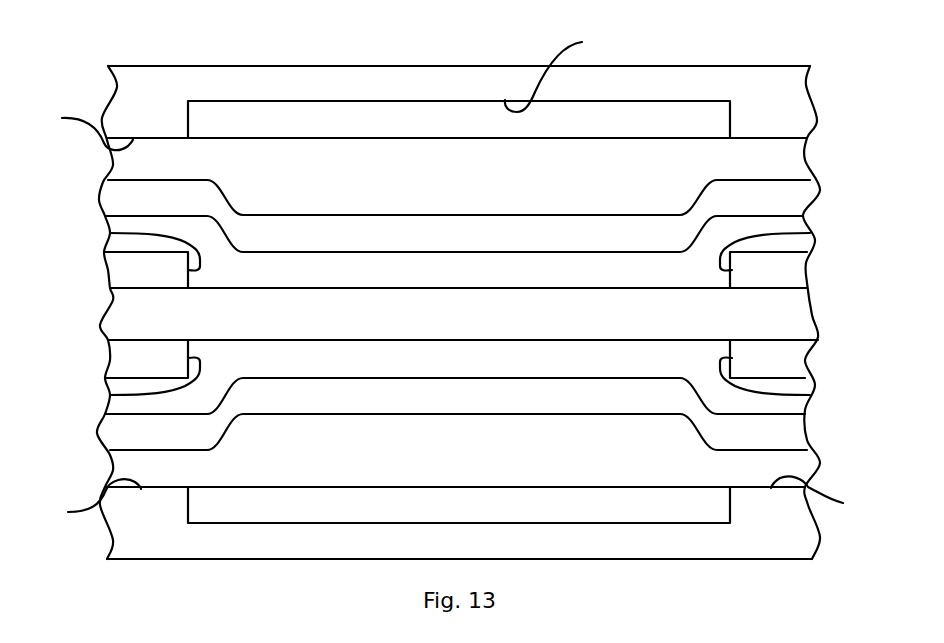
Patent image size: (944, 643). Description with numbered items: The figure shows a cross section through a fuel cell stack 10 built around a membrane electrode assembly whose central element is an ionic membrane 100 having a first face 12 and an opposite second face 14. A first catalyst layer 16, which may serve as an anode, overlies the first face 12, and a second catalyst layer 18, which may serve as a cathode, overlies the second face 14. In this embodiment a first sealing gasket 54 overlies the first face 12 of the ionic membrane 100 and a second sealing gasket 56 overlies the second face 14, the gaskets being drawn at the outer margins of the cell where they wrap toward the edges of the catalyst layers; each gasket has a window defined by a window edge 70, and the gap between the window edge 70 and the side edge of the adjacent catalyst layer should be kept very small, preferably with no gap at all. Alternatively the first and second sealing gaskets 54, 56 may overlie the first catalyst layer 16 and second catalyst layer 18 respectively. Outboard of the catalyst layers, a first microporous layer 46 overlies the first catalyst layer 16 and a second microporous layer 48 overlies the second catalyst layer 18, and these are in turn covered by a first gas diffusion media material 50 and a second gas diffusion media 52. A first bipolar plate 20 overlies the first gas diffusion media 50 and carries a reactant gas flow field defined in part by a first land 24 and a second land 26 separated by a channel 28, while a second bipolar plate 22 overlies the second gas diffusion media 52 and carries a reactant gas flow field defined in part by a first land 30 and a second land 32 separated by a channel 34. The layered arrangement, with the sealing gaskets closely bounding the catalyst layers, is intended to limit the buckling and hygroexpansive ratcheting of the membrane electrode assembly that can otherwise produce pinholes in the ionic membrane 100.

The fuel cell stack 10 is at (828, 58).
The first bipolar plate 20 is at (819, 107).
The second bipolar plate 22 is at (828, 531).
The first land 24 is at (788, 138).
The channel 34 is at (548, 524).
The second land 26 is at (82, 129).
The second land 32 is at (89, 502).
The channel 28 is at (558, 70).
The first land 30 is at (823, 496).
The first gas diffusion media material 50 is at (793, 158).
The second gas diffusion media 52 is at (802, 463).
The first microporous layer 46 is at (805, 193).
The second microporous layer 48 is at (793, 425).
The first catalyst layer 16 is at (792, 232).
The second catalyst layer 18 is at (800, 392).
The first face 12 is at (795, 292).
The second face 14 is at (795, 327).
The ionic membrane 100 is at (783, 312).
The first sealing gasket 54 is at (802, 268).
The second sealing gasket 56 is at (123, 267).
The window edge 70 is at (110, 233).